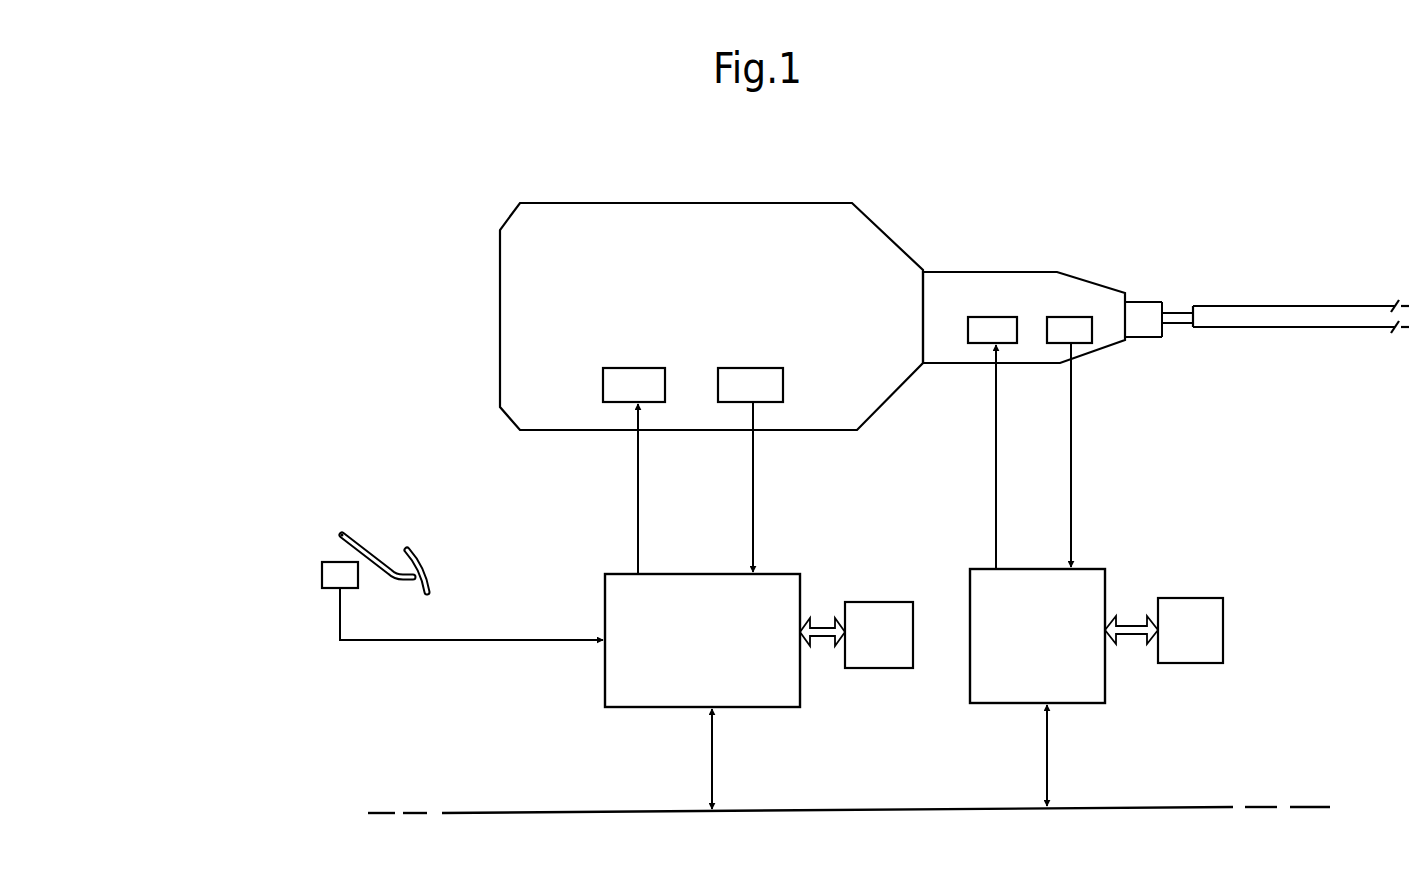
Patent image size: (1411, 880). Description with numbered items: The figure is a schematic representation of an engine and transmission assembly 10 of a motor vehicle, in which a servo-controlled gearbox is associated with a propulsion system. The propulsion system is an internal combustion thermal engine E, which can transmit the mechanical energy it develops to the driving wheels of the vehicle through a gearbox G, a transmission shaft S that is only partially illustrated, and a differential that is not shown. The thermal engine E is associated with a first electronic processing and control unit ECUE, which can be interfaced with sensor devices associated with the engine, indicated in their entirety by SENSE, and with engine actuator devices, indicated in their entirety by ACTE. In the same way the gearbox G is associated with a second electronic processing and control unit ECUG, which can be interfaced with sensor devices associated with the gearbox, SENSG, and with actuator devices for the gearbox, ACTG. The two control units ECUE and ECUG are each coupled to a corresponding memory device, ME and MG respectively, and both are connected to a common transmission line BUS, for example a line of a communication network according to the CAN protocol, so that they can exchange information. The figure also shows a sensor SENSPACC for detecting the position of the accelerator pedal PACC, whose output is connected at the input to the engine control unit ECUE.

The engine and transmission assembly 10 is at (941, 142).
The internal combustion thermal engine E is at (596, 216).
The engine actuator devices ACTE is at (603, 385).
The engine sensor devices SENSE is at (783, 382).
The gearbox G is at (1031, 277).
The gearbox actuator devices ACTG is at (968, 330).
The gearbox sensor devices SENSG is at (1072, 327).
The transmission shaft S is at (1270, 313).
The accelerator pedal PACC is at (426, 553).
The accelerator pedal position sensor SENSPACC is at (322, 576).
The first electronic processing and control unit ECUE is at (775, 582).
The memory device ME is at (873, 658).
The second electronic processing and control unit ECUG is at (1097, 585).
The memory device MG is at (1213, 618).
The common transmission line BUS is at (1178, 807).